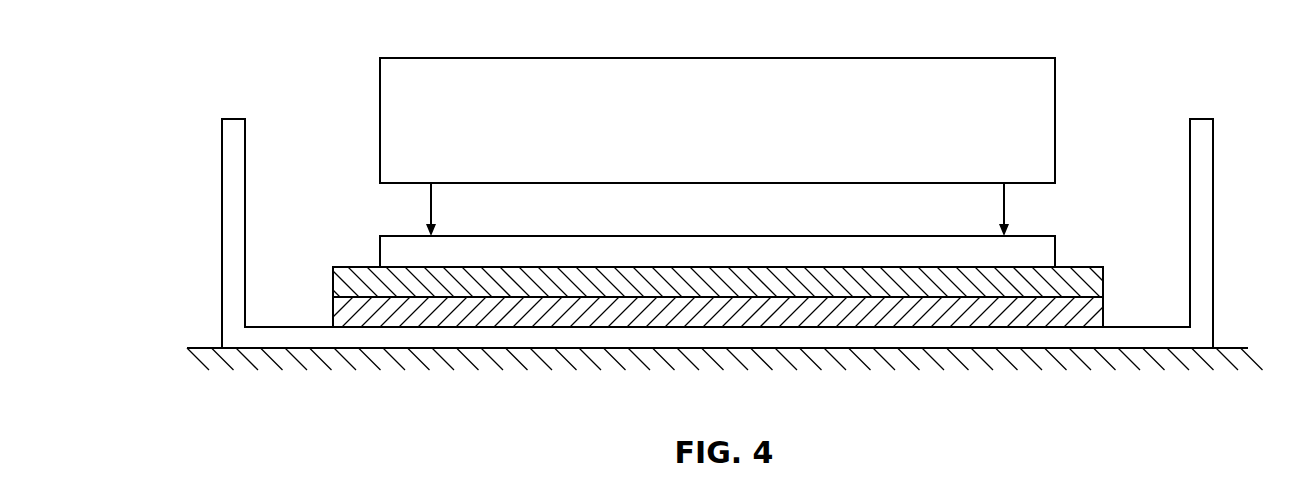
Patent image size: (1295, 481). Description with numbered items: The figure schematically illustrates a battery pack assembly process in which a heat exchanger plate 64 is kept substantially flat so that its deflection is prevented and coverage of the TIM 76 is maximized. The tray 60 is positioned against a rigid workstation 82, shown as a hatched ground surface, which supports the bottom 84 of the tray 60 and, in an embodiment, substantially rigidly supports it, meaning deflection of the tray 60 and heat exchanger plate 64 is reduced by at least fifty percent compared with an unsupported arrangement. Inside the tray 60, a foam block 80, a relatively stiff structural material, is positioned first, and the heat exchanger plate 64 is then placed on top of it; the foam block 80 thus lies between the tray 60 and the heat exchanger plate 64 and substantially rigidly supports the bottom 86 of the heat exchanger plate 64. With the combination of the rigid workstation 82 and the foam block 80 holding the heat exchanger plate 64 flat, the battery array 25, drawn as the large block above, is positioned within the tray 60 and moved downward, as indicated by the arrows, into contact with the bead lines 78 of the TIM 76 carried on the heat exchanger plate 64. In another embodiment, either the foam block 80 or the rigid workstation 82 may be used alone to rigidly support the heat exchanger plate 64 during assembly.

The battery array 25 is at (622, 84).
The tray 60 is at (221, 224).
The heat exchanger plate 64 is at (1069, 283).
The TIM 76 is at (800, 236).
The bead lines 78 is at (552, 248).
The foam block 80 is at (1068, 307).
The rigid workstation 82 is at (443, 370).
The bottom of the tray 84 is at (613, 340).
The bottom of the heat exchanger plate 86 is at (942, 310).